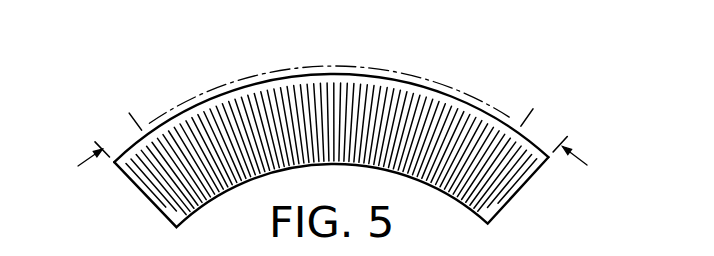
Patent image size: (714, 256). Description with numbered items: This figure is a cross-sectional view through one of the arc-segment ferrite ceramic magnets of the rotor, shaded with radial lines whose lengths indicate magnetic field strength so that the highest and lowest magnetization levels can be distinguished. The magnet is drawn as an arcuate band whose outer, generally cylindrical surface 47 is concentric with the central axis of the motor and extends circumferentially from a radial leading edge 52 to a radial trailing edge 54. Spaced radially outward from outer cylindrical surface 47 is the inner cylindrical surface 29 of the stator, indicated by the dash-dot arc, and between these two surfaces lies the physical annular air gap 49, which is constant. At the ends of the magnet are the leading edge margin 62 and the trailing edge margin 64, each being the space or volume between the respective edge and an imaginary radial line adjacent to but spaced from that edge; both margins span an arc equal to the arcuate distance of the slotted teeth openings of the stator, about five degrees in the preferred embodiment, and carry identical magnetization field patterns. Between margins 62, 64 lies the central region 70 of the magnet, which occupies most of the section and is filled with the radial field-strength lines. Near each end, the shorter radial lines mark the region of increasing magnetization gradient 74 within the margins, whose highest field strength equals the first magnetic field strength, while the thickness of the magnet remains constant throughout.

The inner cylindrical surface 29 is at (256, 72).
The outer cylindrical surface 47 is at (347, 73).
The annular air gap 49 is at (233, 87).
The leading edge 52 is at (116, 165).
The trailing edge 54 is at (540, 170).
The leading edge margin 62 is at (134, 120).
The trailing edge margin 64 is at (524, 120).
The central region 70 is at (398, 100).
The region of increasing magnetization gradient 74 is at (150, 182).